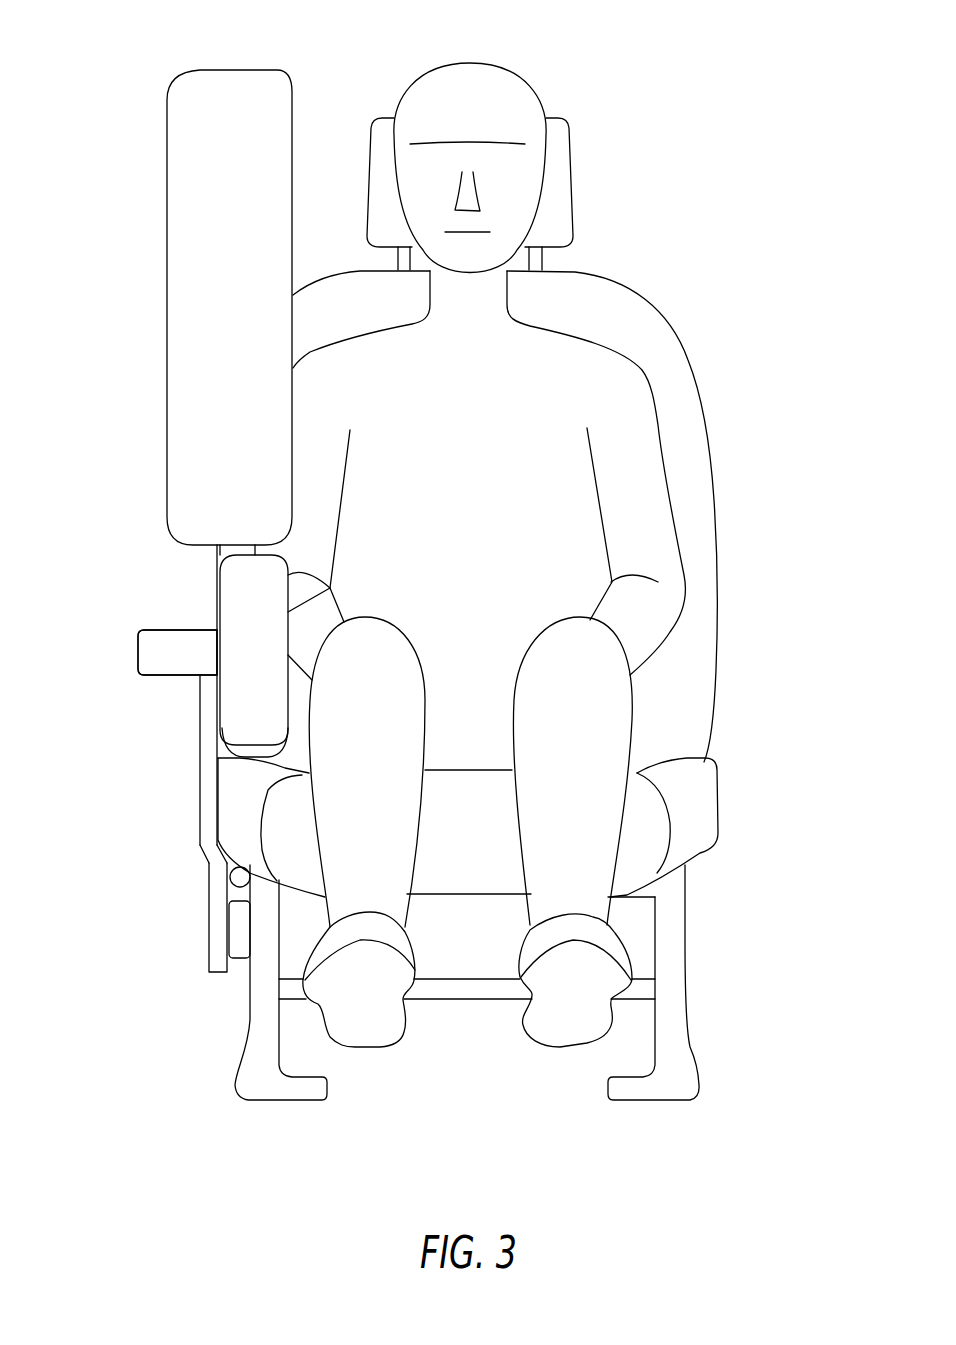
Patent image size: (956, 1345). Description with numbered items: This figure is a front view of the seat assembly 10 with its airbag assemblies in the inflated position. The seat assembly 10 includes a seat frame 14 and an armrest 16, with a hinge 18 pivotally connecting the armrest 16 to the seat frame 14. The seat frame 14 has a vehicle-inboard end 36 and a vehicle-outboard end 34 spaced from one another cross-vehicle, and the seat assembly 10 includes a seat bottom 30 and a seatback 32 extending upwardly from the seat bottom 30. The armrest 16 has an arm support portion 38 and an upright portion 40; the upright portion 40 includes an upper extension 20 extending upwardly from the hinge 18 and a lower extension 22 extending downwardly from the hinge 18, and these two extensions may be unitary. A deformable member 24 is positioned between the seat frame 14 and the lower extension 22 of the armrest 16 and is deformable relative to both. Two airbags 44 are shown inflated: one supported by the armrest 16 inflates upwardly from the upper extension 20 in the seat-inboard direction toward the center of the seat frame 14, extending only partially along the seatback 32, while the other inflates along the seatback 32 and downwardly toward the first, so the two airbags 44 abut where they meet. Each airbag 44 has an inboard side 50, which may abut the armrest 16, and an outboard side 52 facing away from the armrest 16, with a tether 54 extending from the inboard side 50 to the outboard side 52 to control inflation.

The seat assembly 10 is at (702, 187).
The seat frame 14 is at (458, 1000).
The armrest 16 is at (154, 624).
The hinge 18 is at (233, 890).
The upper extension 20 is at (199, 795).
The lower extension 22 is at (209, 955).
The deformable member 24 is at (237, 959).
The seat bottom 30 is at (708, 817).
The seatback 32 is at (690, 410).
The vehicle-outboard end 34 is at (687, 980).
The vehicle-inboard end 36 is at (248, 1040).
The arm support portion 38 is at (138, 648).
The upright portion 40 is at (208, 848).
The airbag 44 is at (220, 92).
The inboard side 50 is at (166, 358).
The outboard side 52 is at (295, 403).
The tether 54 is at (284, 757).